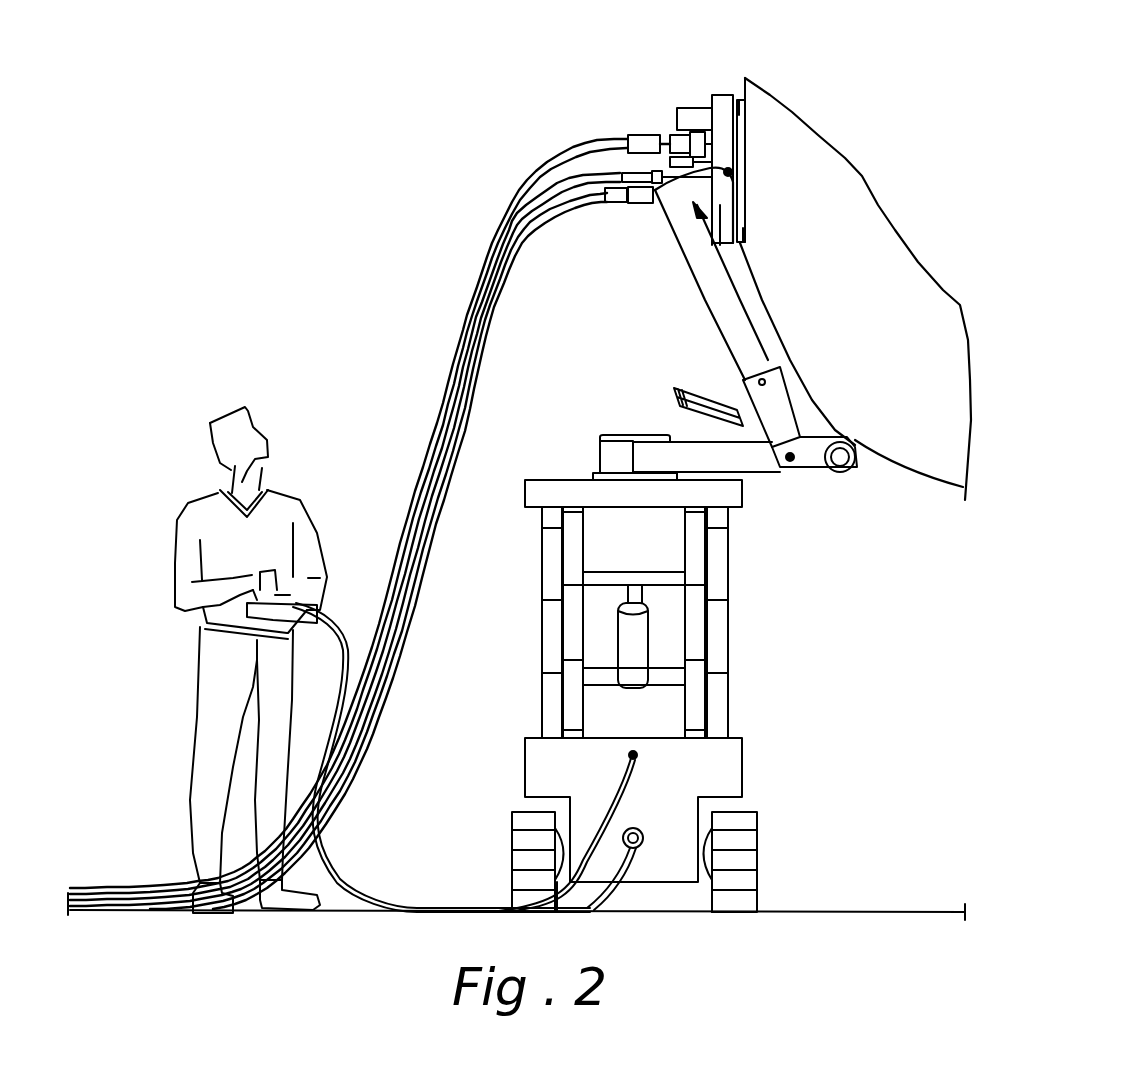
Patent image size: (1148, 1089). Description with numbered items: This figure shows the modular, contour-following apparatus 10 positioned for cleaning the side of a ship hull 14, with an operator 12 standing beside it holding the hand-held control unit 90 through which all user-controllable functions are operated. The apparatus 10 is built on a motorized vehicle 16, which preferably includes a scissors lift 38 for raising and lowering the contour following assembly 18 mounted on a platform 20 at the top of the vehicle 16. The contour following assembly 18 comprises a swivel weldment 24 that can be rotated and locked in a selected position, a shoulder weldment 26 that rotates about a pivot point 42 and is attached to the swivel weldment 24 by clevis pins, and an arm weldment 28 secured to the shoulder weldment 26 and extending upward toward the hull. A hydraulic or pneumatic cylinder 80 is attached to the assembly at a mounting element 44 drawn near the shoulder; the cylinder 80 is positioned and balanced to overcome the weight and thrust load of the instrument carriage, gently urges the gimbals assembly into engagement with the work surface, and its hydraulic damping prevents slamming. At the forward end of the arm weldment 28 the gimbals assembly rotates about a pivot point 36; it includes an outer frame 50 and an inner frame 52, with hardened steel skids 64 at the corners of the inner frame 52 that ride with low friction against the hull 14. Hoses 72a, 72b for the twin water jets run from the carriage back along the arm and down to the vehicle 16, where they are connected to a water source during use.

The modular, contour-following apparatus 10 is at (421, 358).
The operator 12 is at (175, 520).
The ship hull 14 is at (940, 473).
The motorized vehicle 16 is at (743, 764).
The contour following assembly 18 is at (753, 475).
The platform 20 is at (525, 492).
The swivel weldment 24 is at (598, 457).
The shoulder weldment 26 is at (727, 437).
The arm weldment 28 is at (693, 275).
The pivot point 36 is at (740, 172).
The scissors lift 38 is at (540, 642).
The pivot point 42 is at (807, 467).
The bracket 44 is at (737, 377).
The outer frame 50 is at (720, 95).
The inner frame 52 is at (727, 113).
The hardened steel skids 64 is at (740, 95).
The hose and fitting 72a is at (560, 182).
The hose and fitting 72b is at (583, 140).
The hydraulic or pneumatic cylinder 80 is at (698, 378).
The control unit 90 is at (280, 590).